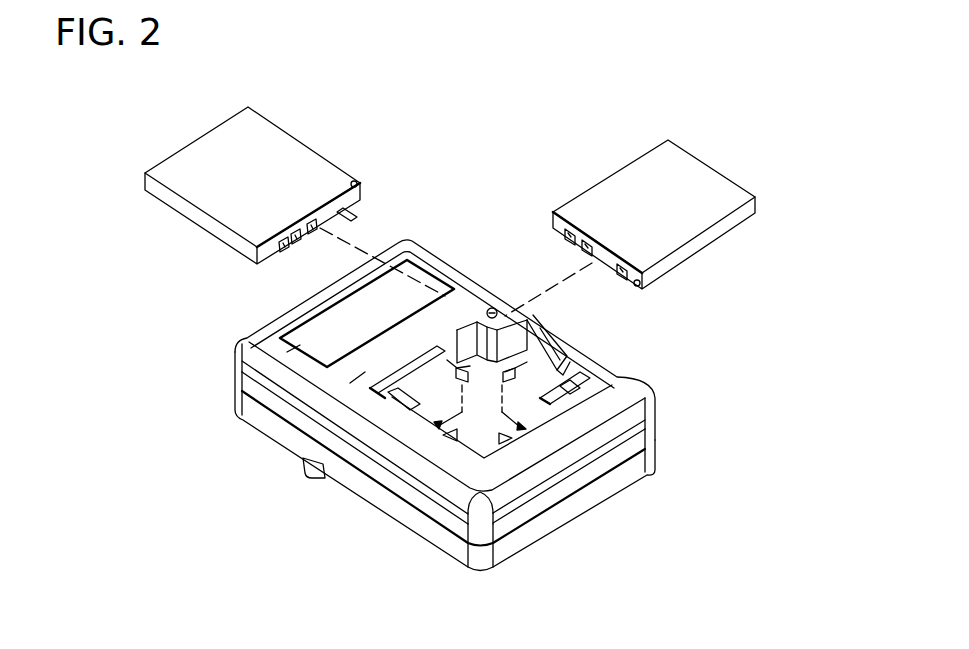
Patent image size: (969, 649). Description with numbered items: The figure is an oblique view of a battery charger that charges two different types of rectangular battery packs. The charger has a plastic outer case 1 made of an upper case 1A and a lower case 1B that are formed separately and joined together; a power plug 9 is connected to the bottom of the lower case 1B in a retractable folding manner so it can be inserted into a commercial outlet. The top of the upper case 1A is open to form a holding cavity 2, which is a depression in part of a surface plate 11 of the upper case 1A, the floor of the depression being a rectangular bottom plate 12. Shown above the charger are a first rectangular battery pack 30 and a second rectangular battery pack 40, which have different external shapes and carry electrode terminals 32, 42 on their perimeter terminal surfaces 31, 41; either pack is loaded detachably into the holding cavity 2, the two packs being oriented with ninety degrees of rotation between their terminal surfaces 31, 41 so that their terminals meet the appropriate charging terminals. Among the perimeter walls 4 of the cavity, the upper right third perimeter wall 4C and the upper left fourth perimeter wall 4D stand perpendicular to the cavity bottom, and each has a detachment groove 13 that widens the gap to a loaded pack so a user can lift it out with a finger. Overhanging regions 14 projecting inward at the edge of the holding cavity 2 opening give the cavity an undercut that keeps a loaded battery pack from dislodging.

The outer case 1 is at (160, 329).
The upper case 1A is at (245, 341).
The lower case 1B is at (243, 420).
The holding cavity 2 is at (483, 448).
The perimeter walls 4 is at (515, 156).
The third perimeter wall 4C is at (527, 320).
The fourth perimeter wall 4D is at (456, 327).
The power plug 9 is at (300, 462).
The surface plate 11 is at (363, 372).
The bottom plate 12 is at (450, 445).
The detachment groove 13 is at (287, 352).
The overhanging region 14 is at (415, 440).
The first rectangular battery pack 30 is at (637, 187).
The terminal surface 31 is at (602, 257).
The electrode terminals 32 is at (562, 230).
The second rectangular battery pack 40 is at (297, 97).
The terminal surface 41 is at (345, 213).
The electrode terminals 42 is at (318, 230).